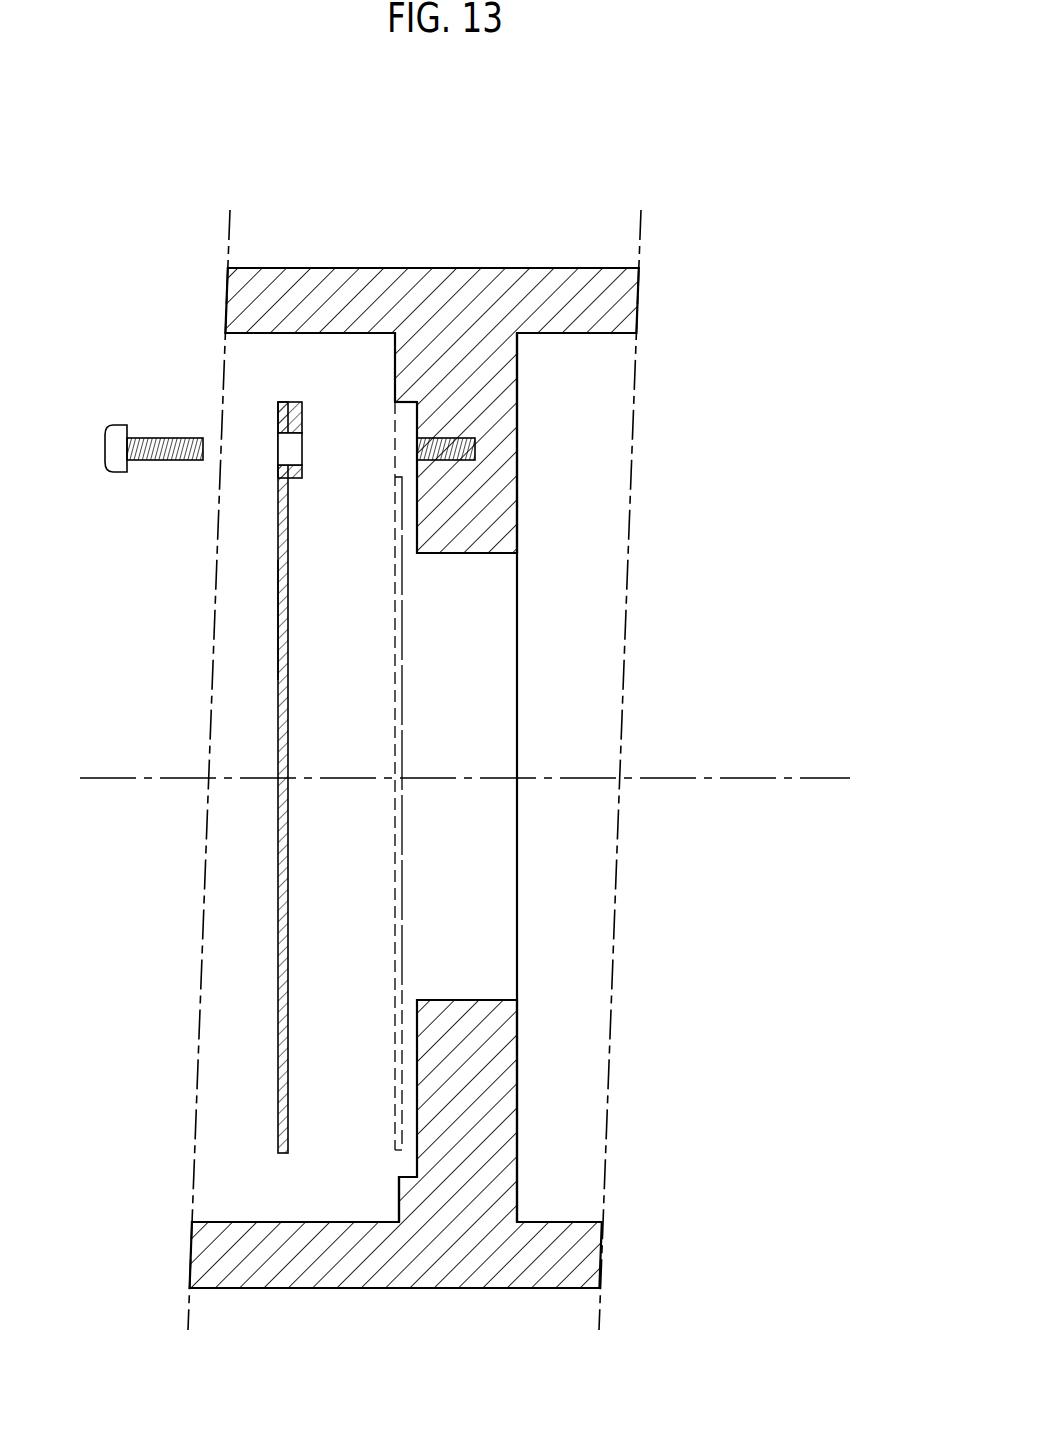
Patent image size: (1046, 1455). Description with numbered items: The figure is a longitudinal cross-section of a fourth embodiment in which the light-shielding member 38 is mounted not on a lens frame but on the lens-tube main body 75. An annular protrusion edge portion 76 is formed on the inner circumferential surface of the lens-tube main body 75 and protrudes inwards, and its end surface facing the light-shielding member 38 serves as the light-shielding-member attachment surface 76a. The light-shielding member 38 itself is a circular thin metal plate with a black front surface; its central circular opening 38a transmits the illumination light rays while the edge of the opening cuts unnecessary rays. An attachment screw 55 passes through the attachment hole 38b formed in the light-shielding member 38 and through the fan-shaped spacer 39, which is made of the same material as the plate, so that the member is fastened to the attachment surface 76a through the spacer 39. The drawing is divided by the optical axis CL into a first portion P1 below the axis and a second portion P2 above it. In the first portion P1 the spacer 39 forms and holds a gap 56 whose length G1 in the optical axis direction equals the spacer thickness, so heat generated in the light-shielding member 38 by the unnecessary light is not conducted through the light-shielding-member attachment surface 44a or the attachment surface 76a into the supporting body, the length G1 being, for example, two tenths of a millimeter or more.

The lens-tube main body 75 is at (413, 262).
The protrusion edge portion 76 is at (517, 1050).
The light-shielding-member attachment surface 76a is at (405, 505).
The light-shielding member 38 is at (398, 548).
The opening 38a is at (278, 622).
The attachment hole 38b is at (278, 458).
The spacer 39 is at (287, 402).
The attachment screw 55 is at (113, 448).
The gap 56 is at (400, 1153).
The light-shielding-member attachment surface 44a is at (404, 1162).
The first portion P1 is at (366, 1032).
The second portion P2 is at (200, 410).
The length of the gap G1 is at (473, 1095).
The optical axis CL is at (110, 782).